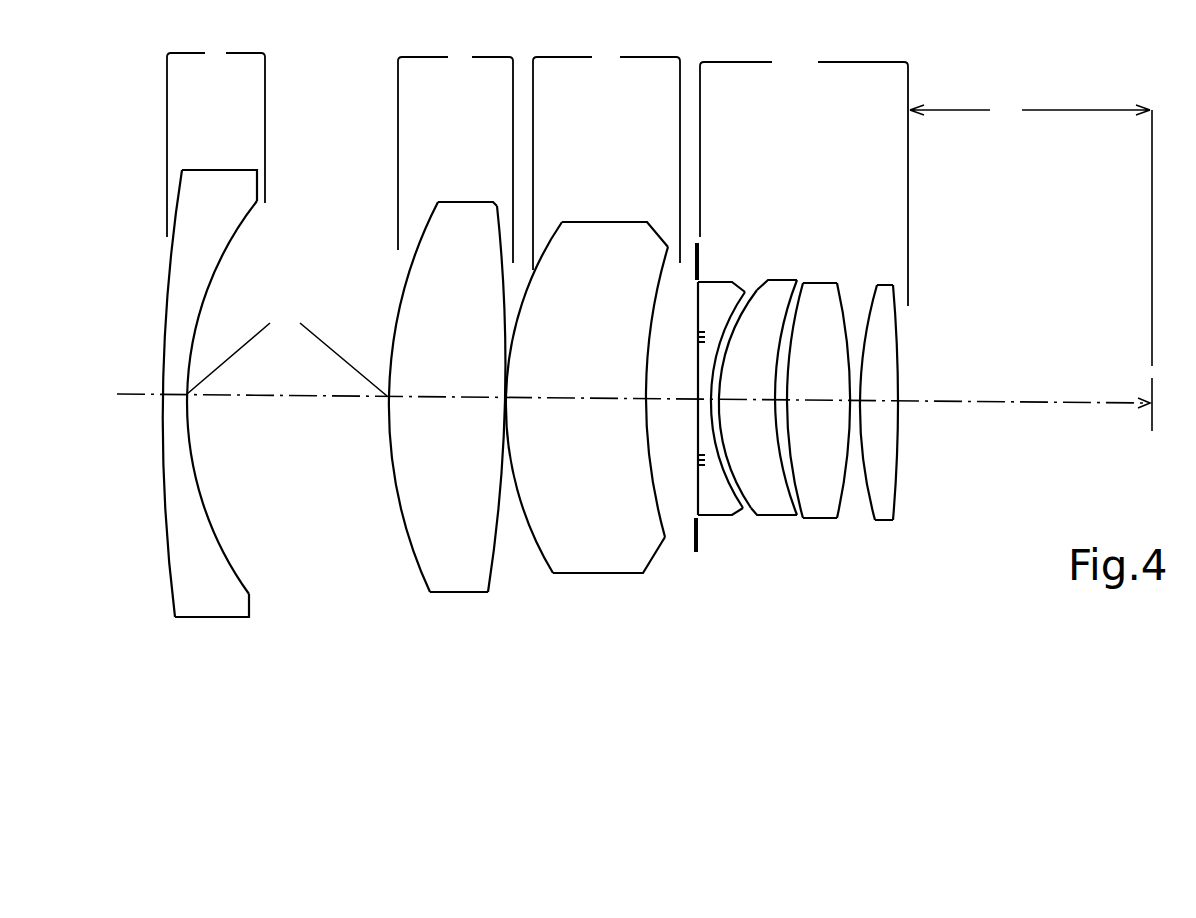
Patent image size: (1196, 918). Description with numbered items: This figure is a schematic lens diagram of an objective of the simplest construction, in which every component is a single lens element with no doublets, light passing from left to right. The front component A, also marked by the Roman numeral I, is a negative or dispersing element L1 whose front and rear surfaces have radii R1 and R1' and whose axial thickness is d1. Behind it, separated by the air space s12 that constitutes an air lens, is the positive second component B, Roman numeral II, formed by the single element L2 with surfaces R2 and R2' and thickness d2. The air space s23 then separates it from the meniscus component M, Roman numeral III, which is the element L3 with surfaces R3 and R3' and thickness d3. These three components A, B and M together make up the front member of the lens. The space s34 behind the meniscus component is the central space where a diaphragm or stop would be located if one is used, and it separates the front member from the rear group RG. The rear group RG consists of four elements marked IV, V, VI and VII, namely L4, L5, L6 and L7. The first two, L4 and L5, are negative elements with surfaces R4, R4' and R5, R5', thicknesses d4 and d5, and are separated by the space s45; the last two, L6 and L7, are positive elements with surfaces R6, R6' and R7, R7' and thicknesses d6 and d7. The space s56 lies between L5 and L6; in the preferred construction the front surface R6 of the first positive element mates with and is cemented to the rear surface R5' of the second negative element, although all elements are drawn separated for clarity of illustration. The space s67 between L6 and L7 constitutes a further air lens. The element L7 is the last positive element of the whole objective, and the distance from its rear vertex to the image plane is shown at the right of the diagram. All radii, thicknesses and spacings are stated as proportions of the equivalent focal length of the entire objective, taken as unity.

The first lens element L1 is at (209, 401).
The second lens element L2 is at (447, 397).
The third lens element L3 is at (587, 396).
The fourth lens element L4 is at (710, 407).
The fifth lens element L5 is at (765, 402).
The sixth lens element L6 is at (818, 389).
The seventh lens element L7 is at (869, 402).
The front component I is at (209, 422).
The second component II is at (447, 433).
The meniscus component III is at (587, 431).
The first rear group element IV is at (710, 461).
The second rear group element V is at (765, 456).
The third rear group element VI is at (818, 443).
The fourth rear group element VII is at (869, 456).
The front component A is at (216, 138).
The second component B is at (455, 153).
The meniscus component M is at (606, 156).
The rear group RG is at (801, 300).
The front surface of first lens element R1 is at (186, 360).
The rear surface of first lens element R1' is at (222, 347).
The front surface of second lens element R2 is at (413, 356).
The rear surface of second lens element R2' is at (481, 355).
The front surface of third lens element R3 is at (542, 348).
The rear surface of third lens element R3' is at (641, 326).
The front surface of fourth lens element R4 is at (717, 343).
The rear surface of fourth lens element R4' is at (738, 356).
The front surface of fifth lens element R5 is at (758, 362).
The rear surface of fifth lens element R5' is at (792, 338).
The front surface of sixth lens element R6 is at (809, 361).
The rear surface of sixth lens element R6' is at (832, 327).
The front surface of seventh lens element R7 is at (859, 362).
The rear surface of seventh lens element R7' is at (879, 340).
The axial thickness of first lens element d1 is at (175, 399).
The axial thickness of second lens element d2 is at (447, 407).
The axial thickness of third lens element d3 is at (581, 407).
The axial thickness of fourth lens element d4 is at (700, 390).
The axial thickness of fifth lens element d5 is at (778, 398).
The axial thickness of sixth lens element d6 is at (790, 403).
The axial thickness of seventh lens element d7 is at (853, 404).
The space between first and second elements s12 is at (287, 396).
The space between second and third elements s23 is at (503, 422).
The central space s34 is at (673, 400).
The space between fourth and fifth elements s45 is at (747, 404).
The space between fifth and sixth elements s56 is at (790, 404).
The space between sixth and seventh elements s67 is at (862, 440).